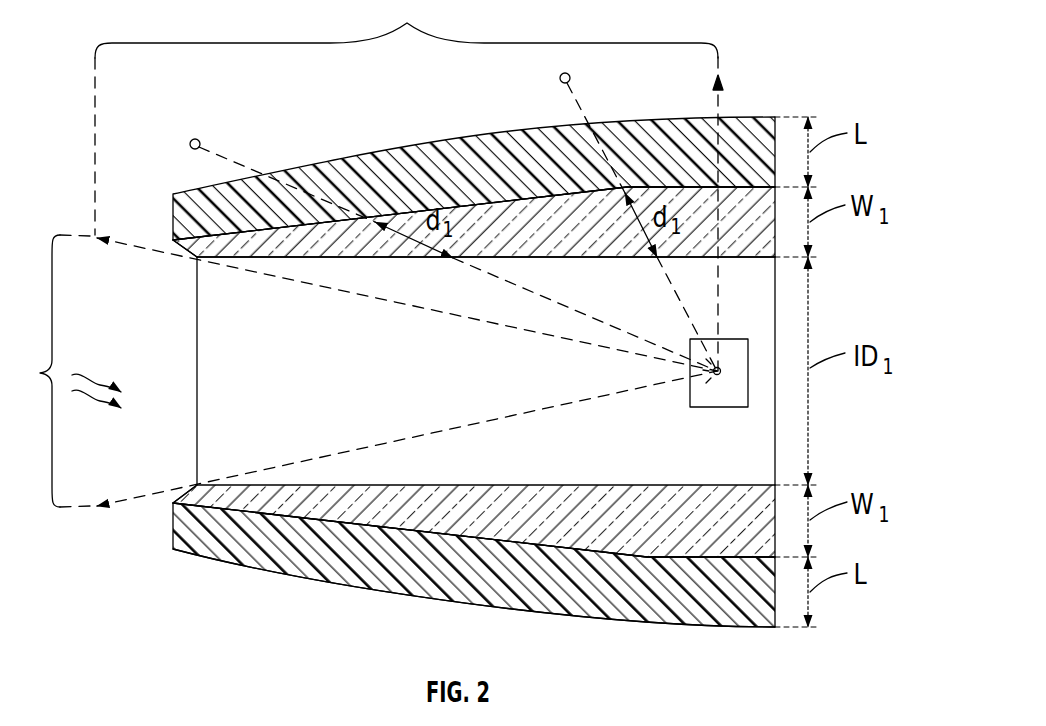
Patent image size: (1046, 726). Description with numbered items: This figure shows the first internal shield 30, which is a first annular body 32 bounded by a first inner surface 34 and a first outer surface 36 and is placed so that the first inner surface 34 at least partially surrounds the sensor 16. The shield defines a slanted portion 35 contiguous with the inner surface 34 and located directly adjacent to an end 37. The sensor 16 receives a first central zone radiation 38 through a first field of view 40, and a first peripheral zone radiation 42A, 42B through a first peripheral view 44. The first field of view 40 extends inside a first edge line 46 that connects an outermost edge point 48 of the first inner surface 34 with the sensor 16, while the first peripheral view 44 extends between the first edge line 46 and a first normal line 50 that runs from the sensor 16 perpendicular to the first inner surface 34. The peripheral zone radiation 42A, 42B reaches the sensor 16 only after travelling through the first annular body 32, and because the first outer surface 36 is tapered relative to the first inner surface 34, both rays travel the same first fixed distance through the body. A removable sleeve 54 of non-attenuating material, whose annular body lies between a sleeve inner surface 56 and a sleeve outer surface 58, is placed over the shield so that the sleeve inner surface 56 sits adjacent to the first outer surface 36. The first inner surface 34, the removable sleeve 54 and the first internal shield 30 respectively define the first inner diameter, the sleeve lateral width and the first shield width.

The sensor 16 is at (718, 408).
The first internal shield 30 is at (785, 229).
The first annular body 32 is at (563, 244).
The first inner surface 34 is at (563, 266).
The slanted portion 35 is at (193, 259).
The first outer surface 36 is at (644, 182).
The end 37 is at (183, 250).
The first central zone radiation 38 is at (74, 375).
The first field of view 40 is at (47, 371).
The first peripheral zone radiation 42A is at (569, 73).
The first peripheral zone radiation 42B is at (199, 139).
The first peripheral view 44 is at (406, 117).
The first edge line 46 is at (438, 311).
The outermost edge point 48 is at (200, 262).
The first normal line 50 is at (718, 289).
The removable sleeve 54 is at (553, 171).
The sleeve inner surface 56 is at (692, 549).
The sleeve outer surface 58 is at (691, 627).